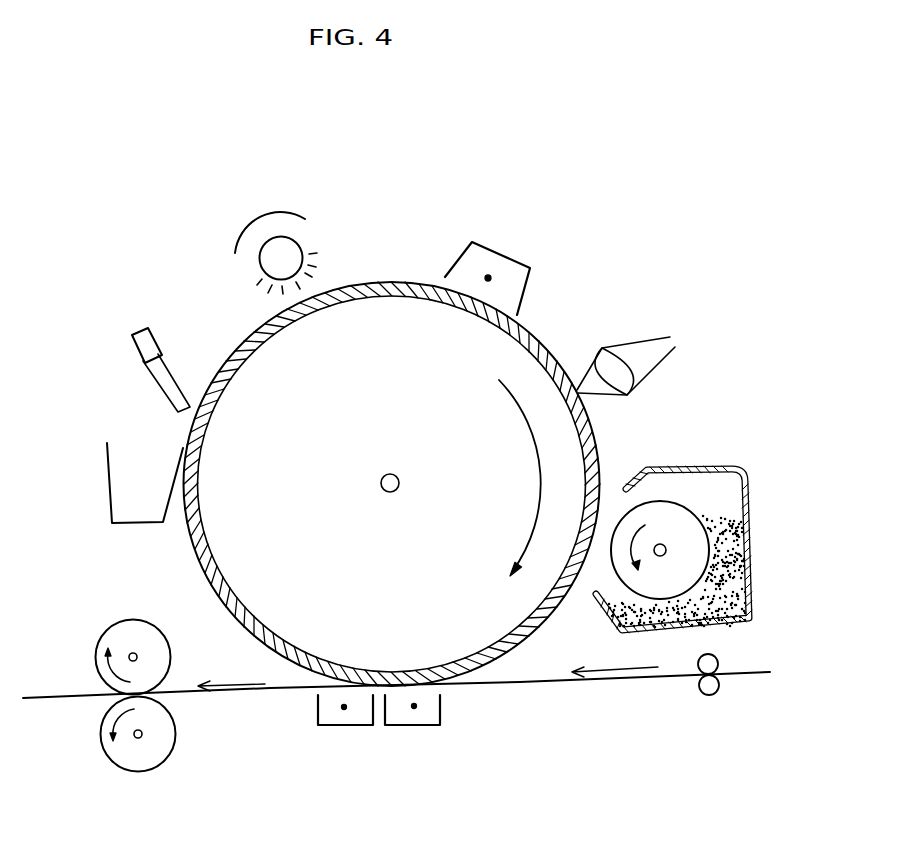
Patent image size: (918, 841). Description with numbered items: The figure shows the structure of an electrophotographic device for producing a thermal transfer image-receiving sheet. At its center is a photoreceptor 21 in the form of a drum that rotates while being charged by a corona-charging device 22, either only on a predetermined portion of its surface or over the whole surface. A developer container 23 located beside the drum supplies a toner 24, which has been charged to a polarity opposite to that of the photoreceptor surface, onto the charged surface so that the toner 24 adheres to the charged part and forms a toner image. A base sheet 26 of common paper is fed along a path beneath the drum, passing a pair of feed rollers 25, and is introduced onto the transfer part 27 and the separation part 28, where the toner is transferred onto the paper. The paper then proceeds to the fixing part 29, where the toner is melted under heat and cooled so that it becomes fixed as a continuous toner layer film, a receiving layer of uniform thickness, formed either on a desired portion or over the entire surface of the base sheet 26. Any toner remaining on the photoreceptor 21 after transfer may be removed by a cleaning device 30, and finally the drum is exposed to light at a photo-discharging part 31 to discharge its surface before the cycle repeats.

The photoreceptor 21 is at (378, 281).
The corona-charging device 22 is at (490, 247).
The developer container 23 is at (712, 465).
The toner 24 is at (720, 557).
The paper feed rollers 25 is at (710, 696).
The base sheet 26 is at (557, 684).
The transfer part 27 is at (424, 727).
The separation part 28 is at (343, 727).
The fixing part 29 is at (108, 630).
The cleaning device 30 is at (131, 343).
The photo-discharging part 31 is at (262, 228).